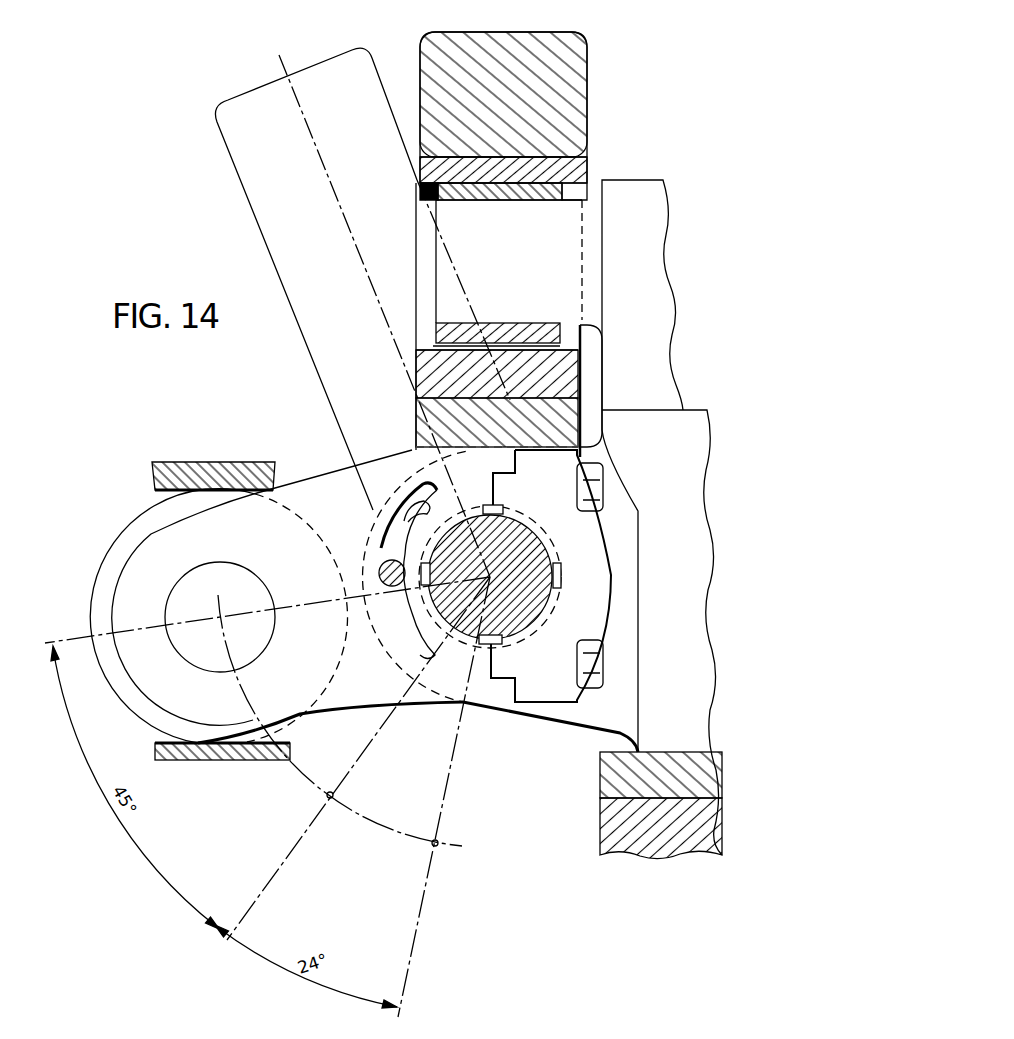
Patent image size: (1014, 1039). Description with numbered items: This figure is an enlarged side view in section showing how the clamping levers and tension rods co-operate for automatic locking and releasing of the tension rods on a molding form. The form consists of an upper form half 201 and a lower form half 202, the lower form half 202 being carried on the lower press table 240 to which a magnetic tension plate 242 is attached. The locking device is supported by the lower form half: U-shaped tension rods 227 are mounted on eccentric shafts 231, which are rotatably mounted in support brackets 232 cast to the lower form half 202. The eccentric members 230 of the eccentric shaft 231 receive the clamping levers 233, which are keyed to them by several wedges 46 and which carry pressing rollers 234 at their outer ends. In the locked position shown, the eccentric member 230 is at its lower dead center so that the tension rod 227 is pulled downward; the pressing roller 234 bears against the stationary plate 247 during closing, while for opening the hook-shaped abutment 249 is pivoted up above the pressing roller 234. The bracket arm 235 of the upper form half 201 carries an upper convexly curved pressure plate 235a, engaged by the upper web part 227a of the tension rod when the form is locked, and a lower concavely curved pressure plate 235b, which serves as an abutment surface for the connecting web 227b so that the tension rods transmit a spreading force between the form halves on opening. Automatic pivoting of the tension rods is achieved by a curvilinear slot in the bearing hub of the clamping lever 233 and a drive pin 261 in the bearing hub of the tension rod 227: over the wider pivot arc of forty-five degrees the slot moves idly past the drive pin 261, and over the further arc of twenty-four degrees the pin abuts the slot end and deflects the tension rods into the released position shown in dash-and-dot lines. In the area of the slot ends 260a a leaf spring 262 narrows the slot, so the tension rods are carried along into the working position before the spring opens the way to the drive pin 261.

The wedges 46 is at (503, 508).
The upper form half 201 is at (648, 193).
The lower form half 202 is at (684, 490).
The tension rods 227 is at (422, 32).
The upper web part 227a is at (570, 66).
The connecting webs 227b is at (558, 384).
The eccentric members 230 is at (507, 648).
The eccentric shafts 231 is at (530, 536).
The support brackets 232 is at (600, 708).
The clamping levers 233 is at (352, 693).
The pressing rollers 234 is at (143, 523).
The bracket arm 235 is at (567, 257).
The upper convexly curved pressure plate 235a is at (538, 203).
The lower concavely curved pressure plate 235b is at (515, 323).
The lower press table 240 is at (707, 822).
The magnetic tension plate 242 is at (707, 776).
The stationary plate 247 is at (250, 760).
The hook-shaped abutment 249 is at (233, 462).
The slot ends 260a is at (420, 458).
The drive pin 261 is at (378, 573).
The leaf spring 262 is at (390, 522).